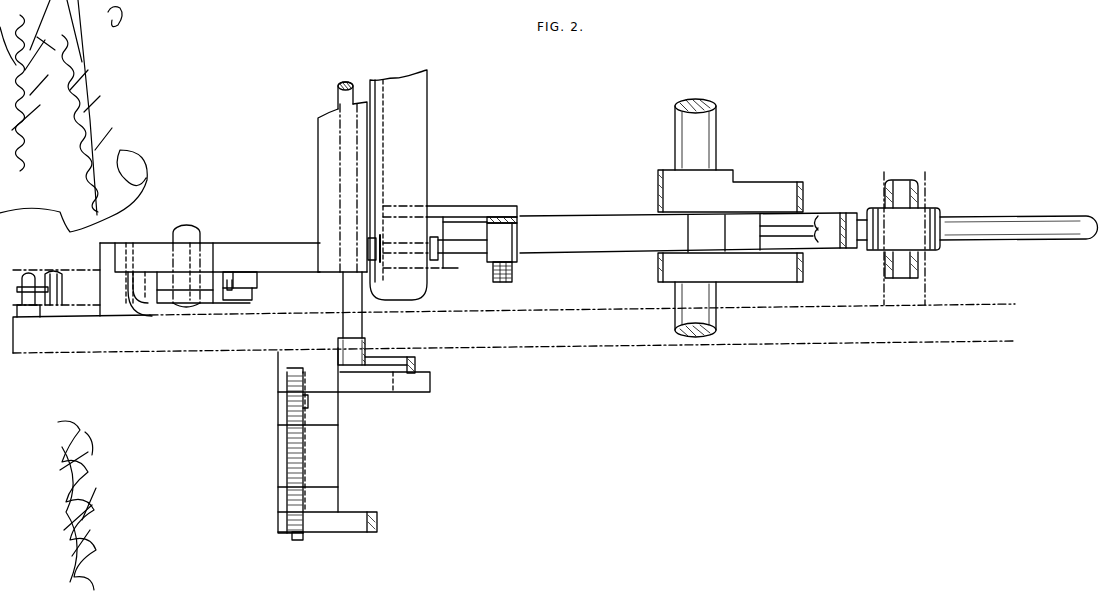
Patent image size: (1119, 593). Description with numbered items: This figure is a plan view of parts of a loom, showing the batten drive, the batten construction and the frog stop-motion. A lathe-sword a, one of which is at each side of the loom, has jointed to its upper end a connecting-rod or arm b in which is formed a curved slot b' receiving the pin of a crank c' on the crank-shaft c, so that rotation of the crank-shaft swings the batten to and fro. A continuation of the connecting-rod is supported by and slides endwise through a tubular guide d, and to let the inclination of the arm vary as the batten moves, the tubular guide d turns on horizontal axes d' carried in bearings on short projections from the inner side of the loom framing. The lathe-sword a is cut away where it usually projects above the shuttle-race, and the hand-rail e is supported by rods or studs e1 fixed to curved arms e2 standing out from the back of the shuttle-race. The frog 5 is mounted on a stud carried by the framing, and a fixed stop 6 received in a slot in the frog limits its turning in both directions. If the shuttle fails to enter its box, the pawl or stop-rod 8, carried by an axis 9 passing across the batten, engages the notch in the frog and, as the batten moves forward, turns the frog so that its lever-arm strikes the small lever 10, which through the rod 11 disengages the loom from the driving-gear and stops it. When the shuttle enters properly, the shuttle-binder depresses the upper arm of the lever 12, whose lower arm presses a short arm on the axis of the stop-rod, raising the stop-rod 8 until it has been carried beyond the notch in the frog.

The frog 5 is at (164, 264).
The fixed stop 6 is at (126, 279).
The pawl or stop-rod 8 is at (210, 257).
The axis 9 is at (310, 318).
The small lever 10 is at (240, 286).
The rod 11 is at (308, 440).
The lever 12 is at (354, 448).
The lathe-sword a is at (903, 238).
The connecting-rod or arm b is at (680, 233).
The curved slot b' is at (1019, 228).
The crank-shaft c is at (695, 218).
The crank c' is at (730, 226).
The tubular guide d is at (901, 194).
The horizontal axes d' is at (902, 272).
The hand-rail e is at (406, 185).
The rods or studs e1 is at (473, 252).
The curved arms e2 is at (472, 231).